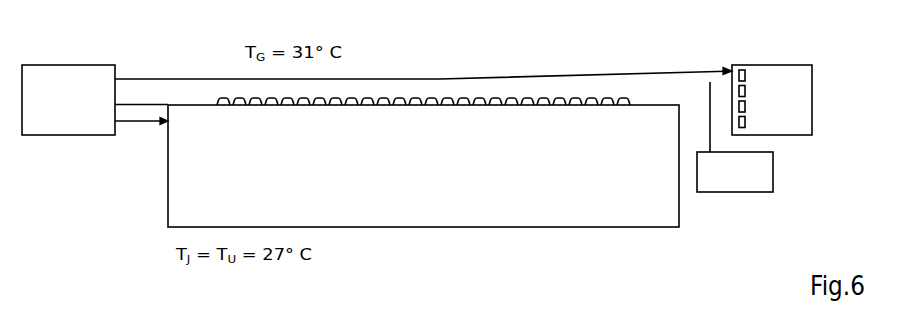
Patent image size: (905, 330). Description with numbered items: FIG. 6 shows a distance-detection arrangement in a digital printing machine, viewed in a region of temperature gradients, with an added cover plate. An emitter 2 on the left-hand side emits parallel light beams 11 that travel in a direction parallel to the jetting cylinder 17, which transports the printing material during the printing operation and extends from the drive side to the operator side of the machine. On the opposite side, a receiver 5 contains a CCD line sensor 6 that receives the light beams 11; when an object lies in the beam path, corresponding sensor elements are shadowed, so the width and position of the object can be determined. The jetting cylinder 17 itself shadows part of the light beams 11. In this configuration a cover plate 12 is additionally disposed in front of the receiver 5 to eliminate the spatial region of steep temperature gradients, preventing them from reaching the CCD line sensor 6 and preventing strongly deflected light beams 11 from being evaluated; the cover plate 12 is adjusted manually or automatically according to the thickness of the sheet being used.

The emitter 2 is at (63, 77).
The receiver 5 is at (776, 72).
The CCD line sensor 6 is at (745, 123).
The light beams 11 is at (443, 77).
The cover plate 12 is at (728, 178).
The jetting cylinder 17 is at (452, 208).